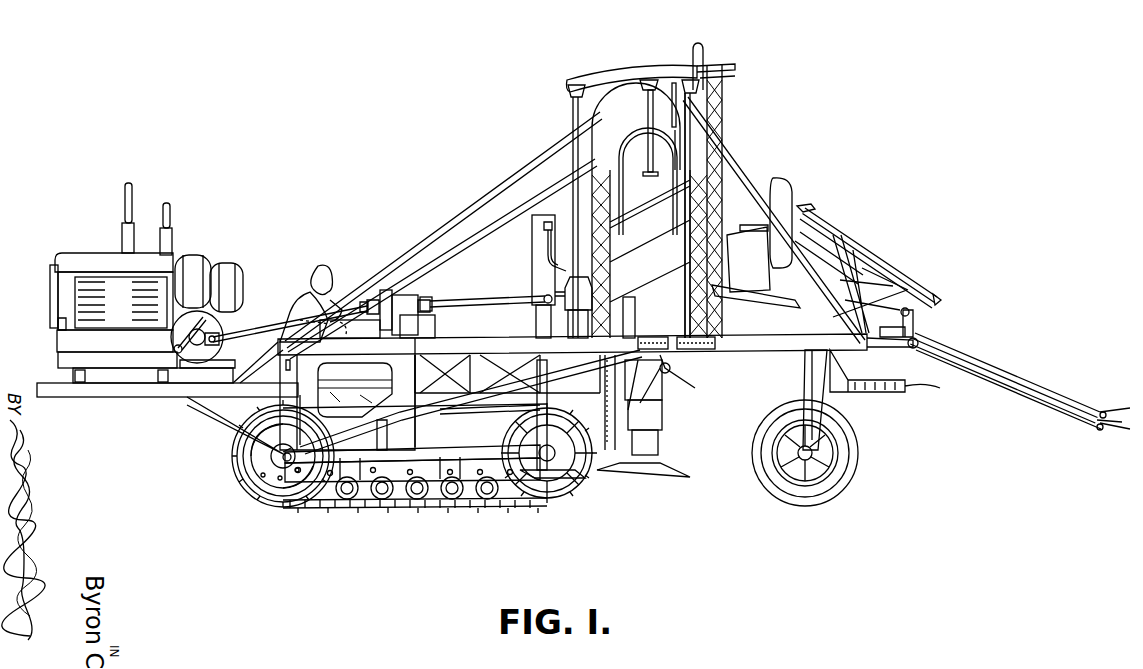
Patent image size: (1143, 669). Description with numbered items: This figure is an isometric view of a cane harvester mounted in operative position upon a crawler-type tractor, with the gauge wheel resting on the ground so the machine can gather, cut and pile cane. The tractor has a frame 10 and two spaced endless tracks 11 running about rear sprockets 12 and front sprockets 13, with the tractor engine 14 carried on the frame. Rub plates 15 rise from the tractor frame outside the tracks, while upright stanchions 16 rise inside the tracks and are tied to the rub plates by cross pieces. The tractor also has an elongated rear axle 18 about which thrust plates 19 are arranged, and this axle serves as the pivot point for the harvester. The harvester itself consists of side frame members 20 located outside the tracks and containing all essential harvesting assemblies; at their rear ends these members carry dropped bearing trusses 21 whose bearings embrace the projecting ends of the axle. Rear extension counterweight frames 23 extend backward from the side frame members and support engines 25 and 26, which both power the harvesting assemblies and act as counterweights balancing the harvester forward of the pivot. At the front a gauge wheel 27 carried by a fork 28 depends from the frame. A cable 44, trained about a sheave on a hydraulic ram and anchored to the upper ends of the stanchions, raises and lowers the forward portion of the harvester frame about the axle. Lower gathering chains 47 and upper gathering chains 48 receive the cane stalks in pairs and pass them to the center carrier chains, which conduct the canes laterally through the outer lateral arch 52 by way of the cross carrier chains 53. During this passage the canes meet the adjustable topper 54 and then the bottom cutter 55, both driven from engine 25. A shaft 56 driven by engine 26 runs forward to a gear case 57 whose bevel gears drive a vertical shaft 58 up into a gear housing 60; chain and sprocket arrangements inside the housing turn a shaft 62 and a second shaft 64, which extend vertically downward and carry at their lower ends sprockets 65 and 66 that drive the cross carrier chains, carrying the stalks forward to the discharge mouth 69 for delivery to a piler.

The frame 10 is at (435, 484).
The endless tracks 11 is at (375, 508).
The rear sprockets 12 is at (242, 468).
The front sprockets 13 is at (560, 491).
The engine 14 is at (484, 332).
The rub plates 15 is at (526, 365).
The upright stanchions 16 is at (532, 244).
The rear axle 18 is at (286, 460).
The thrust plates 19 is at (262, 470).
The side frame members 20 is at (412, 348).
The dropped bearing trusses 21 is at (320, 443).
The rear extension counterweight frames 23 is at (109, 390).
The engine 25 is at (238, 278).
The engine 26 is at (87, 260).
The gauge wheel 27 is at (826, 503).
The fork 28 is at (815, 370).
The cable 44 is at (546, 268).
The lower gathering chains 47 is at (1012, 382).
The upper gathering chains 48 is at (885, 262).
The outer lateral arch 52 is at (636, 121).
The cross carrier chains 53 is at (632, 304).
The adjustable topper 54 is at (742, 302).
The bottom cutter 55 is at (656, 476).
The shaft 56 is at (436, 302).
The gear case 57 is at (586, 306).
The vertical shaft 58 is at (575, 213).
The gear housing 60 is at (613, 78).
The shaft 62 is at (651, 158).
The second shaft 64 is at (693, 138).
The sprocket 65 is at (704, 350).
The sprocket 66 is at (658, 337).
The discharge mouth 69 is at (670, 368).